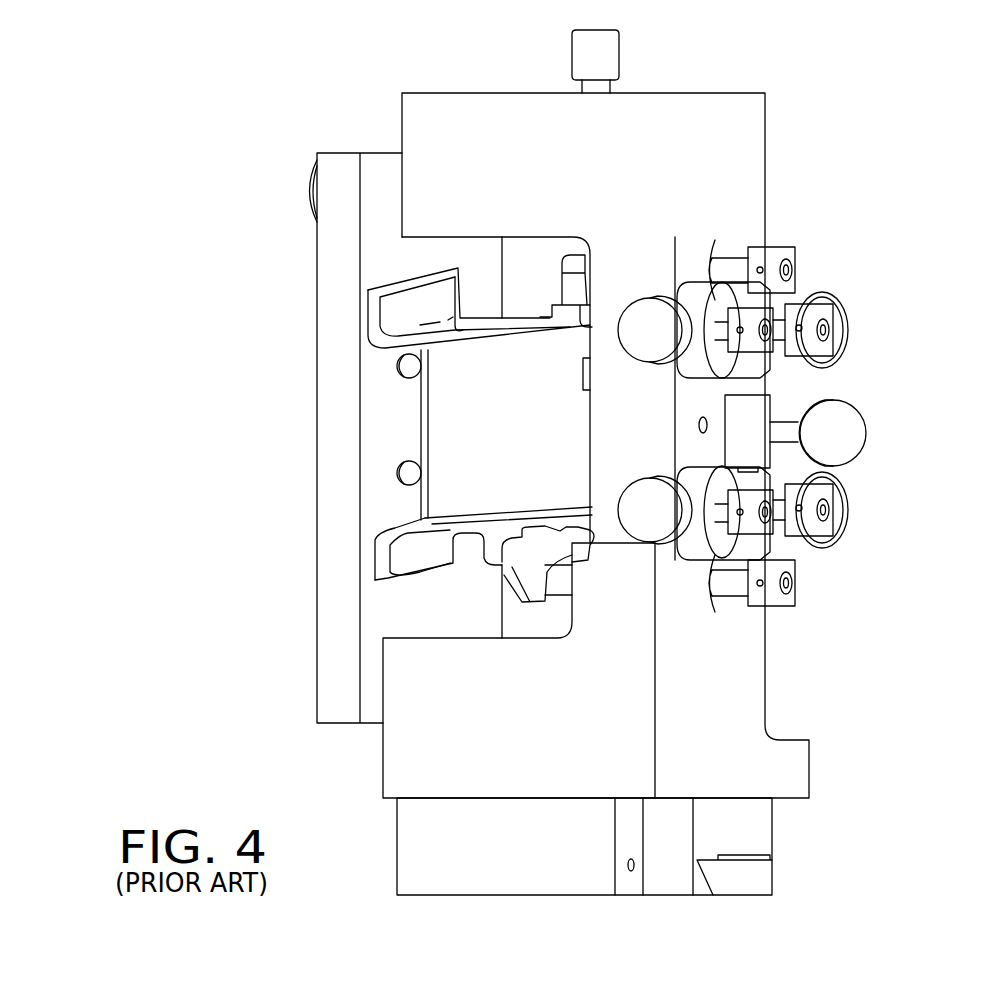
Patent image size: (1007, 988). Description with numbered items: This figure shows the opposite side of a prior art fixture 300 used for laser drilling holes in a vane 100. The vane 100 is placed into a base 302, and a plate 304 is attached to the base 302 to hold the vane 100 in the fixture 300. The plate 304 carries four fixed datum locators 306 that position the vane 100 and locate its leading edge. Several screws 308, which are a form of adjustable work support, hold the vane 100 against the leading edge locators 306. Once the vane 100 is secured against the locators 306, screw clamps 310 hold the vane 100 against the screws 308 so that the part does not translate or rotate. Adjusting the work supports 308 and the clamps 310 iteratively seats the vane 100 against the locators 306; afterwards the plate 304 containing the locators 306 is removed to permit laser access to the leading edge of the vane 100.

The vane 100 is at (527, 438).
The prior art fixture 300 is at (828, 118).
The base 302 is at (715, 752).
The plate 304 is at (342, 185).
The fixed datum locators 306 is at (400, 466).
The screws 308 is at (823, 348).
The screw clamps 310 is at (618, 52).